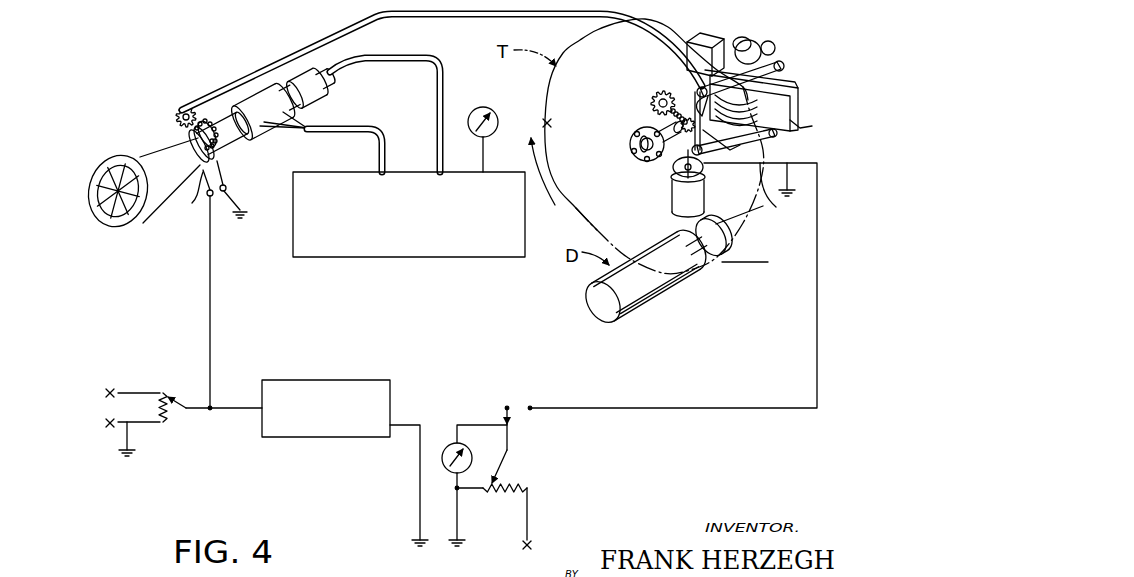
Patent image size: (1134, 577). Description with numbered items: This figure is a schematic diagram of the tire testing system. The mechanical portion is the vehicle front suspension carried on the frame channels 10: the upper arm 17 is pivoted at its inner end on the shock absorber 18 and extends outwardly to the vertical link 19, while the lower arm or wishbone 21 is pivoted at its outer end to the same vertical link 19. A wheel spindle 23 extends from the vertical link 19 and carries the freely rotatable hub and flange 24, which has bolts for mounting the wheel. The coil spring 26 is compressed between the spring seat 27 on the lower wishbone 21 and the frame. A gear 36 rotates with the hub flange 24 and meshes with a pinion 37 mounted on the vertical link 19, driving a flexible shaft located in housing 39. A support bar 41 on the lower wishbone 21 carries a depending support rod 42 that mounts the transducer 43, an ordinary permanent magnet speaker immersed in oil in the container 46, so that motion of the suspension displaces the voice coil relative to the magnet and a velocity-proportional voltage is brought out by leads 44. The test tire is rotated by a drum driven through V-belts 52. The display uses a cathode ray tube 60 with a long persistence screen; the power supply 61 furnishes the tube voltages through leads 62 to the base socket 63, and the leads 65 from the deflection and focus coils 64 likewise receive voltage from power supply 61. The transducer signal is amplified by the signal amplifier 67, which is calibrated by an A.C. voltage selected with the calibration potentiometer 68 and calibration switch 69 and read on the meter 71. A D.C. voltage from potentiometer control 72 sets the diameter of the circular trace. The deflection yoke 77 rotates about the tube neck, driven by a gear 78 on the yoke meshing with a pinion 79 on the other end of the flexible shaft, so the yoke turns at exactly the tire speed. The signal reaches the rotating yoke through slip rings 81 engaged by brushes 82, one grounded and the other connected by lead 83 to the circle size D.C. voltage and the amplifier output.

The channels 10 is at (700, 36).
The upper arm 17 is at (722, 58).
The shock absorber 18 is at (757, 42).
The vertical link 19 is at (694, 92).
The lower arm or wishbone 21 is at (755, 140).
The wheel spindle 23 is at (636, 155).
The hub and flange 24 is at (641, 143).
The coil spring 26 is at (732, 108).
The spring seat 27 is at (786, 128).
The gear 36 is at (660, 126).
The pinion 37 is at (657, 97).
The housing 39 is at (563, 16).
The support bar 41 is at (722, 145).
The support rod 42 is at (673, 172).
The transducer 43 is at (672, 184).
The leads 44 is at (774, 205).
The container 46 is at (676, 206).
The V-belts 52 is at (765, 262).
The cathode ray tube 60 is at (97, 152).
The power supply 61 is at (440, 257).
The leads 62 is at (447, 92).
The base socket 63 is at (322, 91).
The deflection coils and focus coil 64 is at (262, 100).
The leads 65 is at (346, 128).
The signal amplifier 67 is at (346, 380).
The calibration potentiometer 68 is at (510, 455).
The calibration switch 69 is at (510, 404).
The meter 71 is at (456, 490).
The potentiometer control 72 is at (190, 405).
The deflection yoke 77 is at (175, 131).
The gear 78 is at (222, 168).
The pinion 79 is at (176, 111).
The slip rings 81 is at (188, 143).
The contactors or brushes 82 is at (192, 203).
The lead 83 is at (212, 297).